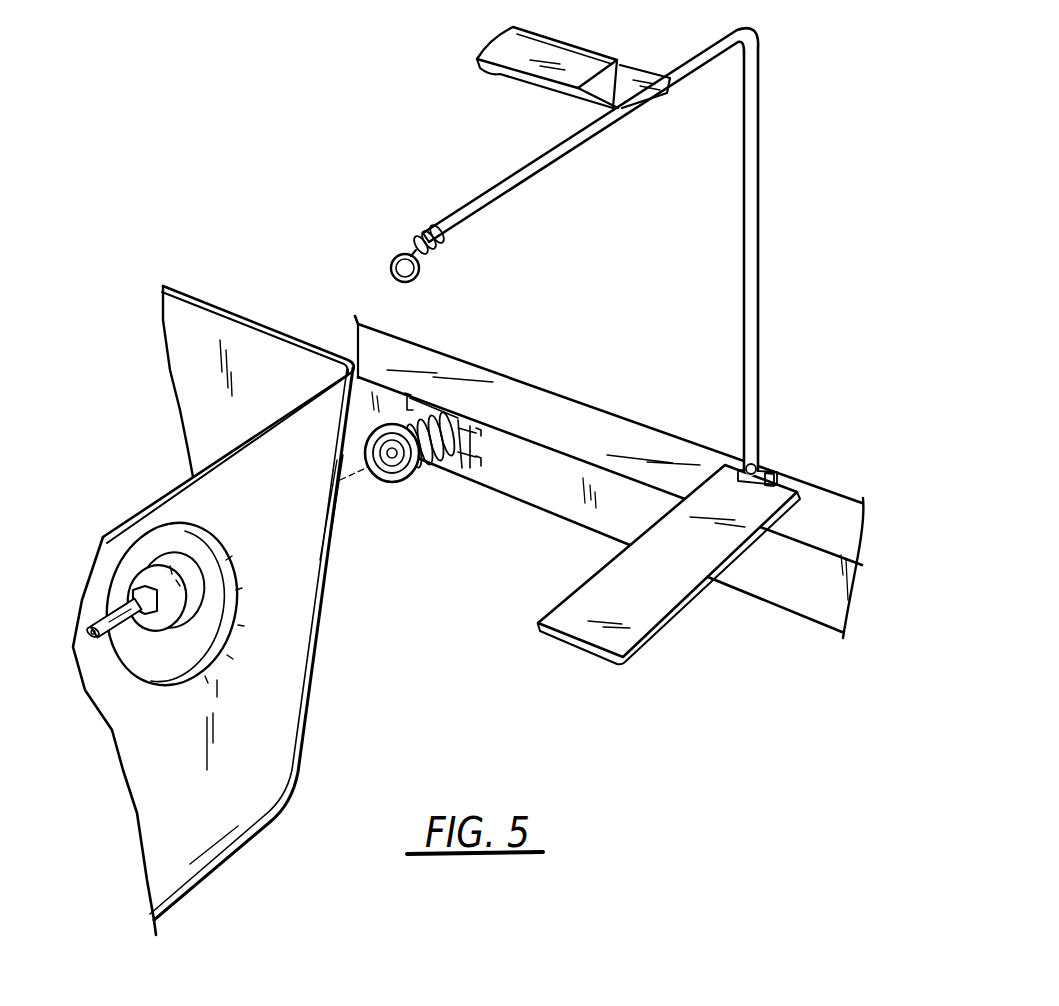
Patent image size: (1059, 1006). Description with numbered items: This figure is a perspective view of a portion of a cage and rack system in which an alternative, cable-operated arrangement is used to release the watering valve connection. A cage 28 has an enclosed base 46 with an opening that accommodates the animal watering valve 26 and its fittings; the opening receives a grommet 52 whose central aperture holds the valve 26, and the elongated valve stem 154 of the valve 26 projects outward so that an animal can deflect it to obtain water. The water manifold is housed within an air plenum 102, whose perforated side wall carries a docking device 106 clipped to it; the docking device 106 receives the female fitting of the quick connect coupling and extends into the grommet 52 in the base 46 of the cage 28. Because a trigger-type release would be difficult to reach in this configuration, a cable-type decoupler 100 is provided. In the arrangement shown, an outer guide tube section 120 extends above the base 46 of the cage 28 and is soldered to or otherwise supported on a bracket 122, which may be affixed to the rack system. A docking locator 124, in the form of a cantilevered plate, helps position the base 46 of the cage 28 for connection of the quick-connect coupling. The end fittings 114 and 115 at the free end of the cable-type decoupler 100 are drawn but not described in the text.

The watering valve 26 is at (123, 600).
The cage 28 is at (338, 613).
The base 46 is at (217, 730).
The grommet 52 is at (170, 563).
The cable-type decoupler 100 is at (512, 168).
The air plenum 102 is at (587, 503).
The docking device 106 is at (402, 480).
The ring 114 is at (418, 281).
The coil 115 is at (424, 230).
The outer guide tube section 120 is at (762, 207).
The bracket 122 is at (540, 58).
The docking locator 124 is at (633, 647).
The valve stem 154 is at (93, 636).